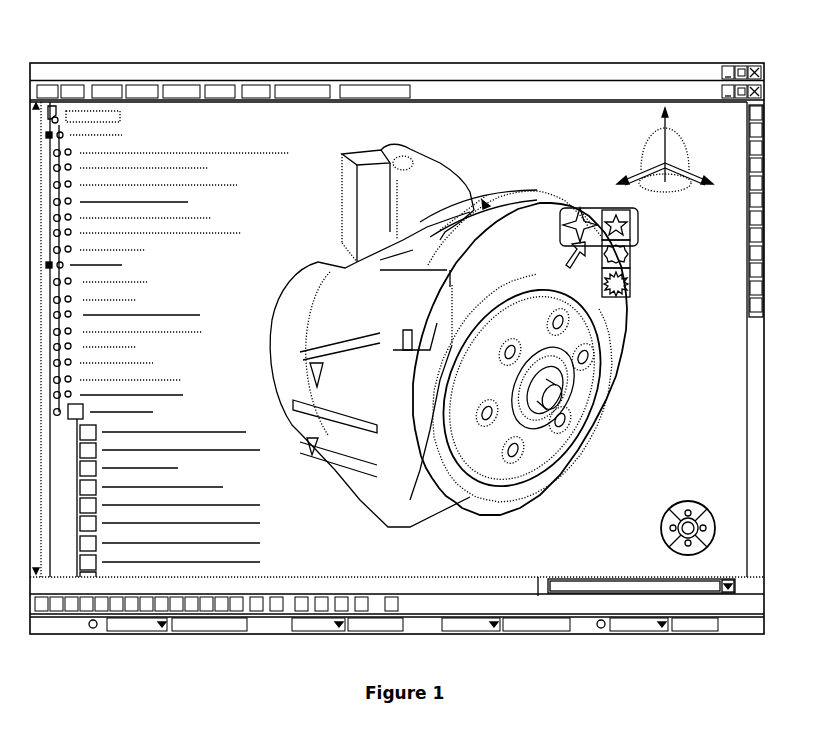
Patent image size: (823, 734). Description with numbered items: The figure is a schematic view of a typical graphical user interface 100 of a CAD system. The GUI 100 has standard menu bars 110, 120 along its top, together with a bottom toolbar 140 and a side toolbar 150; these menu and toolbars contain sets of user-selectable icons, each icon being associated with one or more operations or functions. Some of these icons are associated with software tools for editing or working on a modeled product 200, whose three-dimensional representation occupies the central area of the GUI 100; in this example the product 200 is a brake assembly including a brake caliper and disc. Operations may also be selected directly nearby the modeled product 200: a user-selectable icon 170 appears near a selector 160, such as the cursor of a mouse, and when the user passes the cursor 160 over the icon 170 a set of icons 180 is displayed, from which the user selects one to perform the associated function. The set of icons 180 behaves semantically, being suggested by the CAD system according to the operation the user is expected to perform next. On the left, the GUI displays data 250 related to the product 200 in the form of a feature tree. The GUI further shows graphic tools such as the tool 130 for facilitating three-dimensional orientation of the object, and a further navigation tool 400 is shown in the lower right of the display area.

The graphical user interface 100 is at (612, 517).
The menu bar 110 is at (487, 63).
The menu bar 120 is at (558, 97).
The graphic tool 130 is at (677, 187).
The bottom toolbar 140 is at (410, 580).
The side toolbar 150 is at (752, 333).
The selector 160 is at (590, 265).
The user-selectable icon 170 is at (585, 205).
The set of icons 180 is at (628, 258).
The modeled product 200 is at (362, 290).
The data 250 is at (137, 327).
The navigation tool 400 is at (680, 492).